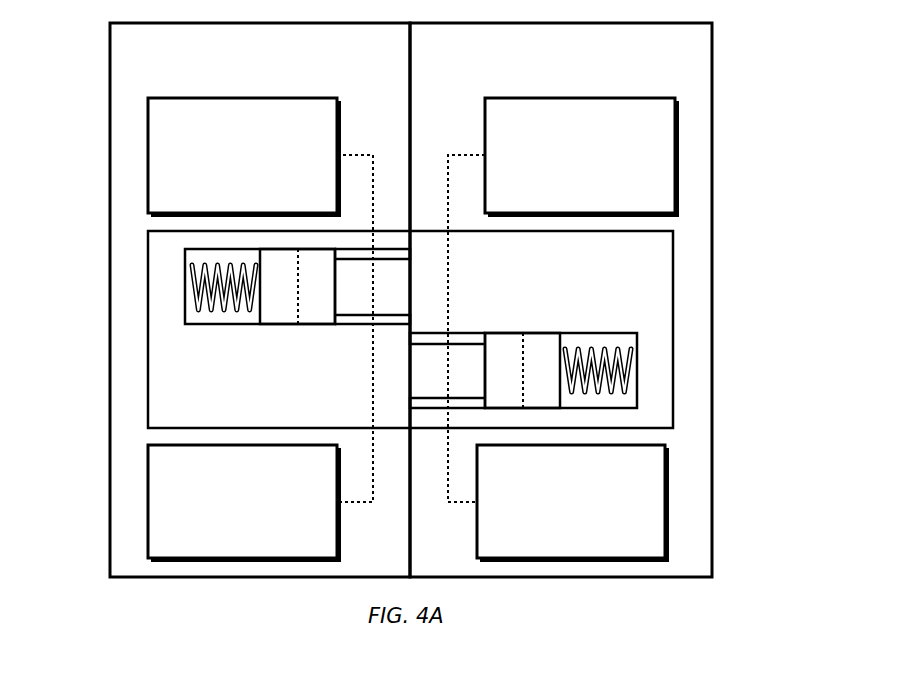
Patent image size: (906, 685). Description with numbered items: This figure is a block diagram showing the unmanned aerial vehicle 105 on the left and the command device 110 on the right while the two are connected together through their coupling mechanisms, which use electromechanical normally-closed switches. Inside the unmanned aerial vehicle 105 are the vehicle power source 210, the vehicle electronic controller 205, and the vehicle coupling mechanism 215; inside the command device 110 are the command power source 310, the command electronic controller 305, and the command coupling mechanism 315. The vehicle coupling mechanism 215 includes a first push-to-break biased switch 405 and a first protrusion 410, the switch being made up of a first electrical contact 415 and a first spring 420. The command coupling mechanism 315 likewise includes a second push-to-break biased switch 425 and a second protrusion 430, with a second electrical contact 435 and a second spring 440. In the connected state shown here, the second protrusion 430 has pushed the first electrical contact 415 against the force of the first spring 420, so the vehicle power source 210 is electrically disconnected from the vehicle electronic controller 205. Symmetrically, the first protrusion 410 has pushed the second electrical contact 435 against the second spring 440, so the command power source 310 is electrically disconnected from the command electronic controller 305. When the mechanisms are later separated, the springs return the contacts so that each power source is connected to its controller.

The unmanned aerial vehicle 105 is at (260, 300).
The command device 110 is at (561, 300).
The vehicle power source 210 is at (243, 156).
The command power source 310 is at (581, 156).
The vehicle electronic controller 205 is at (243, 502).
The command electronic controller 305 is at (572, 502).
The vehicle coupling mechanism 215 is at (157, 420).
The command coupling mechanism 315 is at (663, 250).
The first push-to-break biased switch 405 is at (226, 301).
The first electrical contact 415 is at (317, 315).
The first spring 420 is at (188, 270).
The second protrusion 430 is at (367, 305).
The second push-to-break biased switch 425 is at (593, 333).
The second electrical contact 435 is at (503, 343).
The second spring 440 is at (635, 350).
The first protrusion 410 is at (457, 353).